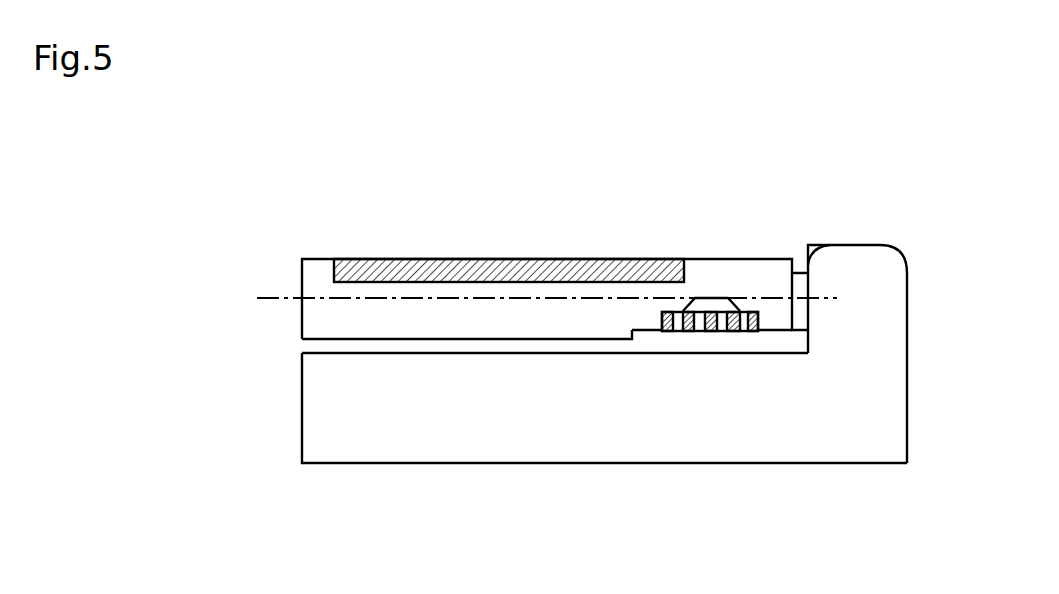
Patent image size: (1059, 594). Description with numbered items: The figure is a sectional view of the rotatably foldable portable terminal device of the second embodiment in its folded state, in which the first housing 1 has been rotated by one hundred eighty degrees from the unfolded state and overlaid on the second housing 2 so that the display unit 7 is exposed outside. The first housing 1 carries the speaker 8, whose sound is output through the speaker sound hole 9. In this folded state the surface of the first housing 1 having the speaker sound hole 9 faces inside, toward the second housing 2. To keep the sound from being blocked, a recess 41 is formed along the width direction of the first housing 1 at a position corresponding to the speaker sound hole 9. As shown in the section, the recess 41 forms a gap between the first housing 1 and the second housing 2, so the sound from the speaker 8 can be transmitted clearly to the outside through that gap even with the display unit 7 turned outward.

The first housing 1 is at (308, 310).
The second housing 2 is at (503, 450).
The display unit 7 is at (348, 258).
The speaker 8 is at (705, 299).
The speaker sound hole 9 is at (750, 331).
The recess 41 is at (683, 340).